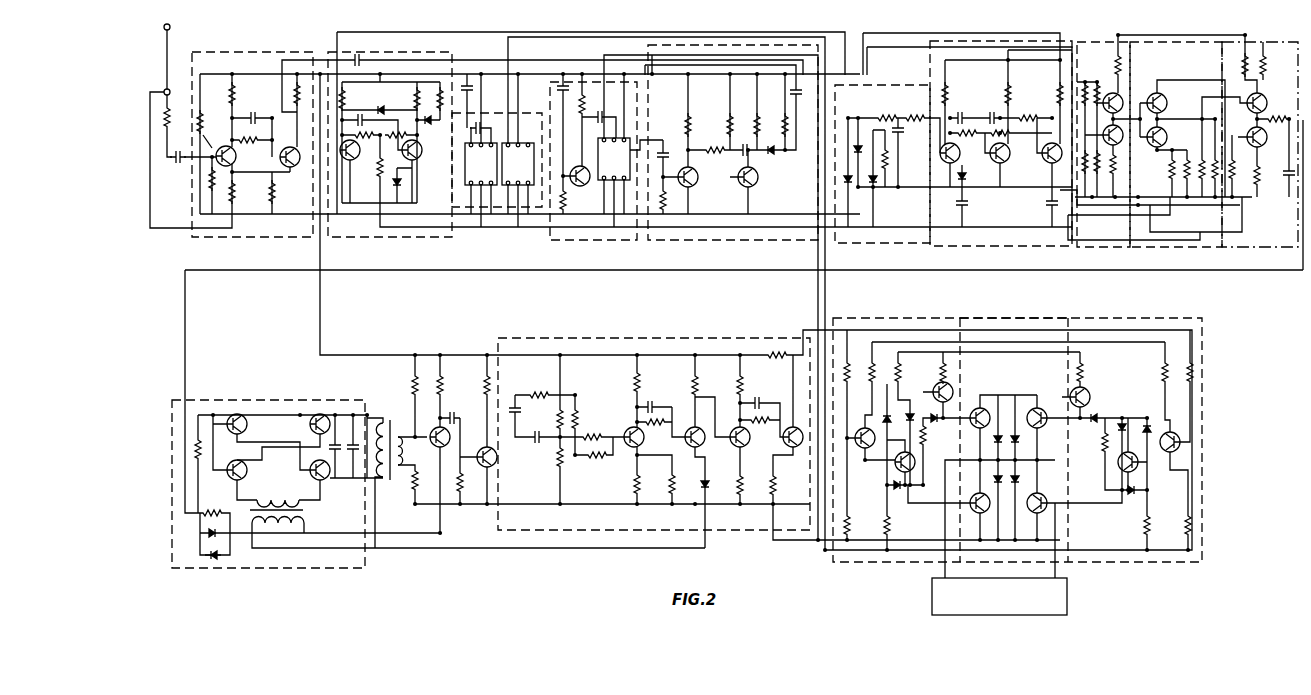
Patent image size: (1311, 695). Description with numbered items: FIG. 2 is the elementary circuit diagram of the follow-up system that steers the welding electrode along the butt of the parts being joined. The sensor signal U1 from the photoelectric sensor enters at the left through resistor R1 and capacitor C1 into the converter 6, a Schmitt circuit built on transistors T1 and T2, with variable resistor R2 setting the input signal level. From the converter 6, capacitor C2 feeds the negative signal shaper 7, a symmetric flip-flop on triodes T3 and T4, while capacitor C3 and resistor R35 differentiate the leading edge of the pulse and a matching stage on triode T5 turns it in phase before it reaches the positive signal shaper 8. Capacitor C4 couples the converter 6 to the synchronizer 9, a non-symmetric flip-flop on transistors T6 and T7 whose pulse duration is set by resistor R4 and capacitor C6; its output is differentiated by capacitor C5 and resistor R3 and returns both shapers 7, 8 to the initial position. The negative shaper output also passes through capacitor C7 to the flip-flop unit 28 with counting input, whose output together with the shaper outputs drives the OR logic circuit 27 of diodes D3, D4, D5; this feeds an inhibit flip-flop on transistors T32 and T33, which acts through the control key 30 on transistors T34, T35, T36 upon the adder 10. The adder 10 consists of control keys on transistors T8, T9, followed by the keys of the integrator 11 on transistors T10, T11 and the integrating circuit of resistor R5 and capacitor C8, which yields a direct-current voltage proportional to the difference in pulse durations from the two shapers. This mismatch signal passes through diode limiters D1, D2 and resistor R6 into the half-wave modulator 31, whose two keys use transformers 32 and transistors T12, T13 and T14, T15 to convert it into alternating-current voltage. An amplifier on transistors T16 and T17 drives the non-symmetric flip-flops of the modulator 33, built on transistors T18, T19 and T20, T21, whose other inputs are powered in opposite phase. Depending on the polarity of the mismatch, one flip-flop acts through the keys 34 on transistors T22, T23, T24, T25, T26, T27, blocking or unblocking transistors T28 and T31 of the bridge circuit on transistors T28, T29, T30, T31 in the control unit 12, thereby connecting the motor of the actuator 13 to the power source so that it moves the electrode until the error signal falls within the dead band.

The supply voltage terminal U1 is at (178, 59).
The resistor R1 is at (176, 117).
The variable resistor R2 is at (200, 192).
The resistor R3 is at (666, 214).
The resistor R4 is at (728, 124).
The resistor R5 is at (1272, 124).
The resistor R6 is at (203, 514).
The resistor R35 is at (568, 200).
The capacitor C1 is at (175, 160).
The capacitor C2 is at (470, 78).
The capacitor C3 is at (560, 92).
The capacitor C4 is at (794, 90).
The capacitor C5 is at (663, 147).
The capacitor C6 is at (758, 114).
The capacitor C7 is at (360, 58).
The capacitor C8 is at (1289, 182).
The diode limiter D1 is at (225, 556).
The diode limiter D2 is at (205, 535).
The diode D3 is at (838, 180).
The diode D4 is at (860, 130).
The diode D5 is at (878, 188).
The transistor T1 is at (223, 145).
The transistor T2 is at (288, 145).
The triode T3 is at (350, 168).
The triode T4 is at (418, 158).
The triode T5 is at (576, 162).
The transistor T6 is at (692, 189).
The transistor T7 is at (758, 177).
The transistor T8 is at (1168, 137).
The transistor T9 is at (1162, 92).
The transistor T10 is at (1269, 99).
The transistor T11 is at (1262, 148).
The transistor T12 is at (232, 479).
The transistor T13 is at (238, 413).
The transistor T14 is at (323, 481).
The transistor T15 is at (320, 413).
The transistor T16 is at (436, 428).
The transistor T17 is at (493, 465).
The transistor T18 is at (631, 428).
The transistor T19 is at (699, 447).
The transistor T20 is at (750, 443).
The transistor T21 is at (791, 427).
The transistor T22 is at (862, 423).
The transistor T23 is at (940, 383).
The transistor T24 is at (896, 468).
The transistor T25 is at (1088, 390).
The transistor T26 is at (1120, 469).
The transistor T27 is at (1183, 427).
The transistor T28 is at (975, 495).
The transistor T29 is at (978, 408).
The transistor T30 is at (1041, 429).
The transistor T31 is at (1053, 490).
The transistor T32 is at (940, 152).
The transistor T33 is at (1010, 156).
The transistor T34 is at (1046, 143).
The transistor T35 is at (1112, 92).
The transistor T36 is at (1113, 160).
The converter 6 is at (268, 240).
The negative signal shaper 7 is at (412, 240).
The positive signal shaper 8 is at (594, 241).
The synchronizer 9 is at (778, 243).
The adder 10 is at (1175, 245).
The integrator 11 is at (1255, 246).
The control unit 12 is at (1035, 321).
The actuator 13 is at (999, 596).
The OR logic circuit 27 is at (888, 243).
The flip-flop unit 28 is at (982, 255).
The control key 30 is at (1080, 245).
The half-wave modulator 31 is at (338, 403).
The transformer 32 is at (305, 522).
The modulator 33 is at (756, 338).
The keys 34 is at (884, 321).